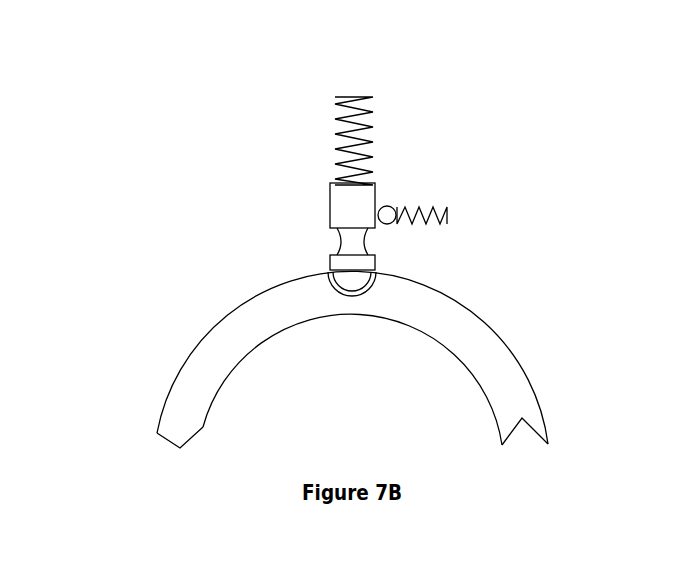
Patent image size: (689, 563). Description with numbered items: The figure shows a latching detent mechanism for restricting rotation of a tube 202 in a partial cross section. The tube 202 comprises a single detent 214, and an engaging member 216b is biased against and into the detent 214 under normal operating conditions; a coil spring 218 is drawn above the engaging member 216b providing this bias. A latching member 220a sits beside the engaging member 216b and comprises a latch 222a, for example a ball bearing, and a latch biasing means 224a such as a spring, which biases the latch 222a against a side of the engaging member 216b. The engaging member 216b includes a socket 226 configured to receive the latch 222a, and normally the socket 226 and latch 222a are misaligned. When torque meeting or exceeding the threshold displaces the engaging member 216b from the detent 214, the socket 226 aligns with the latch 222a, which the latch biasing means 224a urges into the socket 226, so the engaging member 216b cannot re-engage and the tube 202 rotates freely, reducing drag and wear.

The tube 202 is at (187, 424).
The detent 214 is at (338, 288).
The engaging member 216b is at (350, 272).
The spring 218 is at (360, 127).
The latching member 220a is at (441, 194).
The latch 222a is at (390, 212).
The latch biasing means 224a is at (450, 215).
The socket 226 is at (365, 245).